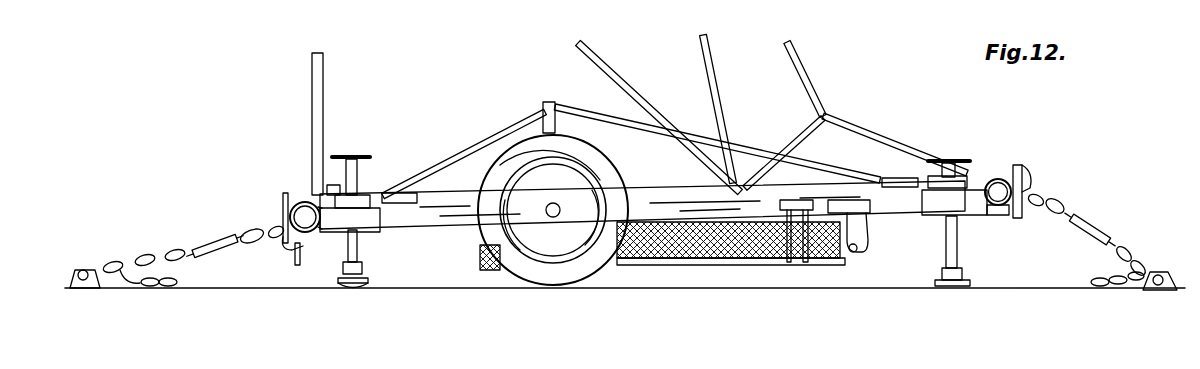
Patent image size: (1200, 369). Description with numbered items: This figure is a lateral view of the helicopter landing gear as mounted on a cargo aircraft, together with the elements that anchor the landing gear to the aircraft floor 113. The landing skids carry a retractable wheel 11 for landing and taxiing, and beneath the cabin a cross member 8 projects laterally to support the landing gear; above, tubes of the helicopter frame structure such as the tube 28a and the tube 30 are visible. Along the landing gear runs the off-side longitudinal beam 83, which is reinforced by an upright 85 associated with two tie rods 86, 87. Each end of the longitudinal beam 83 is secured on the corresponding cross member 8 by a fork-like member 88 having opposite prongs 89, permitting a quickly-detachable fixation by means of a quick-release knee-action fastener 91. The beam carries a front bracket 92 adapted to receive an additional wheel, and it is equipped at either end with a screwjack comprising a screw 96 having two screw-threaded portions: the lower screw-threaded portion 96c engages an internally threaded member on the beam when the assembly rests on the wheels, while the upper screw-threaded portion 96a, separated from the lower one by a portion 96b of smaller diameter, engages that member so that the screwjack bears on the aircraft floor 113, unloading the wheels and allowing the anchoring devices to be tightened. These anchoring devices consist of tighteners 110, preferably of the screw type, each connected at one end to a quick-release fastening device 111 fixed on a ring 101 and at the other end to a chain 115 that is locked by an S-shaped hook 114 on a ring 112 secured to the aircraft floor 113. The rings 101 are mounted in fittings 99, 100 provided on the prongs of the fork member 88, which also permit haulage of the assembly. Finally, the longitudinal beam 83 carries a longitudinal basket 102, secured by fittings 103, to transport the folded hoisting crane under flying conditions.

The cross member 8 is at (1000, 180).
The retractable wheel 11 is at (605, 175).
The tube 28a is at (330, 118).
The tube 30 is at (718, 96).
The longitudinal beam 83 is at (652, 193).
The upright 85 is at (550, 100).
The tie rod 86 is at (478, 142).
The tie rod 87 is at (755, 150).
The fork-like member 88 is at (370, 198).
The prong 89 is at (322, 245).
The quick-release knee-action fastener 91 is at (283, 250).
The front bracket 92 is at (865, 236).
The screw 96 is at (358, 170).
The upper screw-threaded portion 96a is at (325, 190).
The smaller-diameter portion 96b is at (1005, 215).
The lower screw-threaded portion 96c is at (365, 248).
The fitting 99 is at (300, 262).
The fitting 100 is at (1028, 178).
The ring 101 is at (275, 226).
The longitudinal basket 102 is at (712, 250).
The fitting 103 is at (798, 256).
The tightener 110 is at (205, 246).
The quick-release fastening device 111 is at (248, 232).
The ring 112 is at (88, 268).
The aircraft floor 113 is at (848, 288).
The S-shaped hook 114 is at (1135, 286).
The chain 115 is at (145, 255).